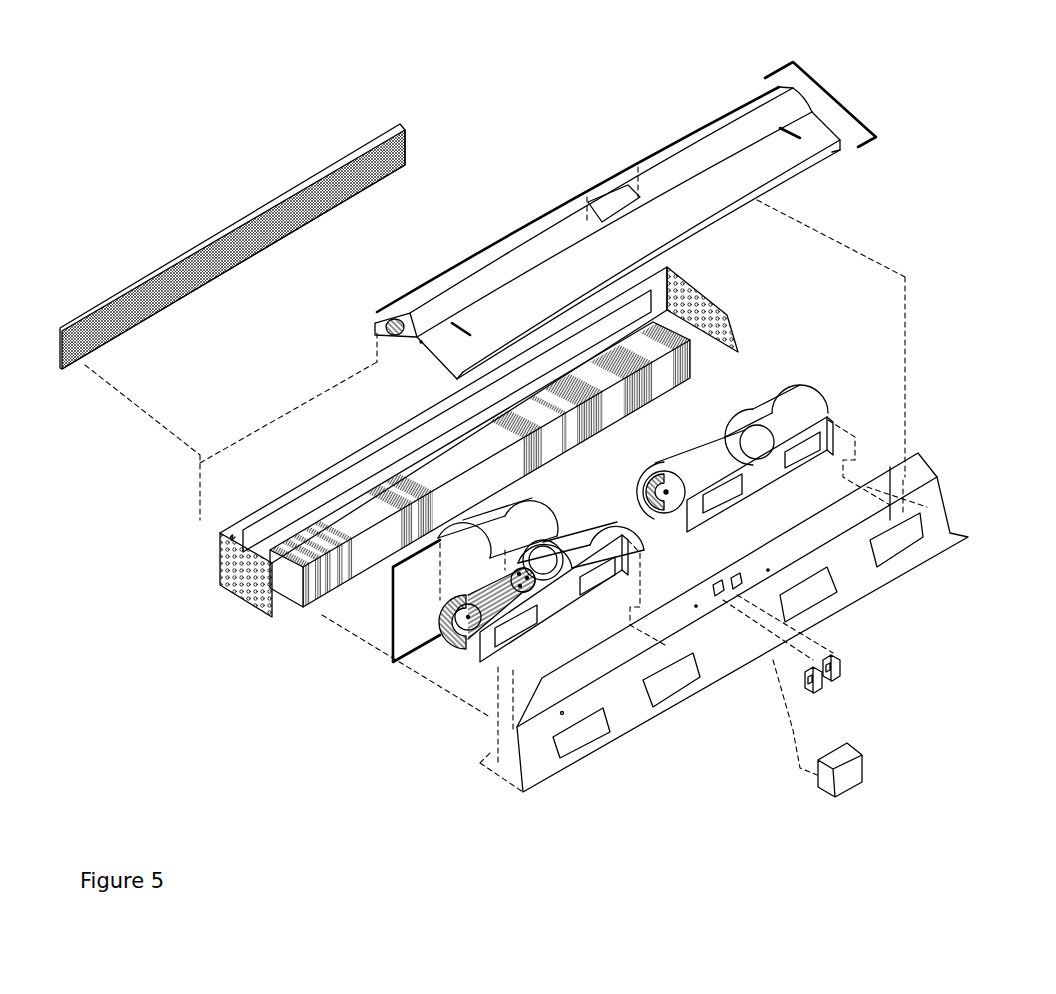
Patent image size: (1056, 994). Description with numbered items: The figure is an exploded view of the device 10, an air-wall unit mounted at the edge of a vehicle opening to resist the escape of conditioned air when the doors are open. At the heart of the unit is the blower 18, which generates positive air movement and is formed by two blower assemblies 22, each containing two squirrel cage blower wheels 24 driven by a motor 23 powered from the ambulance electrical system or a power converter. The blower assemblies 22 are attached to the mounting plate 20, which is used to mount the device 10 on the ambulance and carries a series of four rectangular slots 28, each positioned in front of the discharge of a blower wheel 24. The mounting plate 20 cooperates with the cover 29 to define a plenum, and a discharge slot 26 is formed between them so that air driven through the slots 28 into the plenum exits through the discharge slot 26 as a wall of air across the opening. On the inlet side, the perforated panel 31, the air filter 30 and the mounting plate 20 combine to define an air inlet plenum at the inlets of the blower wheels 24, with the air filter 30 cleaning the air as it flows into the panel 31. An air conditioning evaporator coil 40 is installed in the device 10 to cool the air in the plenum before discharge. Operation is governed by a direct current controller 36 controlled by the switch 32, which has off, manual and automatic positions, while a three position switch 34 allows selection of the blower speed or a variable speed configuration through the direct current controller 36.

The device 10 is at (573, 132).
The blower 18 is at (550, 625).
The mounting plate 20 is at (523, 794).
The blower assembly 22 is at (393, 613).
The motor 23 is at (543, 563).
The squirrel cage blower wheel 24 is at (452, 647).
The discharge slot 26 is at (808, 162).
The slots 28 is at (612, 725).
The cover 29 is at (868, 130).
The air filter 30 is at (242, 207).
The perforated panel 31 is at (228, 597).
The switch 32 is at (827, 685).
The three position switch 34 is at (843, 667).
The direct current controller 36 is at (862, 767).
The air conditioning evaporator coil 40 is at (303, 607).